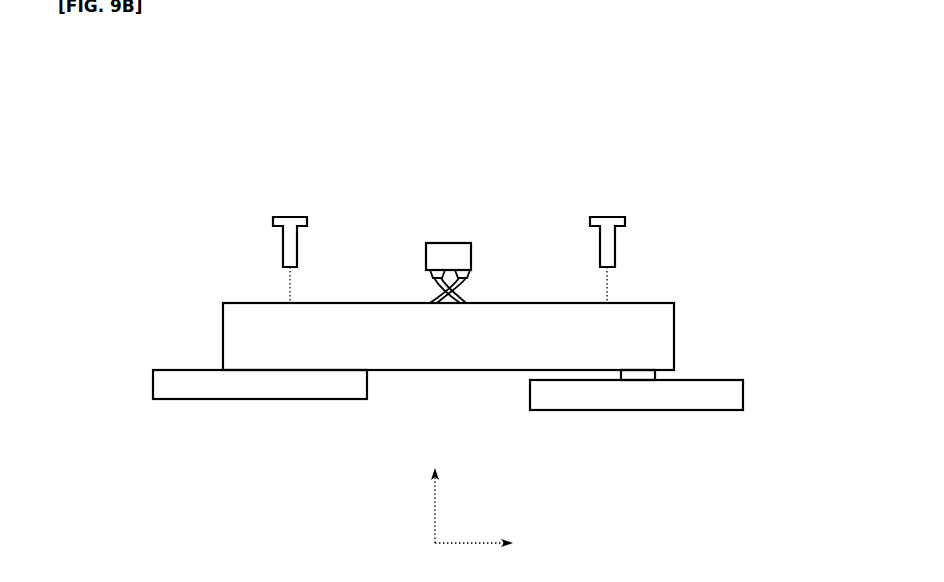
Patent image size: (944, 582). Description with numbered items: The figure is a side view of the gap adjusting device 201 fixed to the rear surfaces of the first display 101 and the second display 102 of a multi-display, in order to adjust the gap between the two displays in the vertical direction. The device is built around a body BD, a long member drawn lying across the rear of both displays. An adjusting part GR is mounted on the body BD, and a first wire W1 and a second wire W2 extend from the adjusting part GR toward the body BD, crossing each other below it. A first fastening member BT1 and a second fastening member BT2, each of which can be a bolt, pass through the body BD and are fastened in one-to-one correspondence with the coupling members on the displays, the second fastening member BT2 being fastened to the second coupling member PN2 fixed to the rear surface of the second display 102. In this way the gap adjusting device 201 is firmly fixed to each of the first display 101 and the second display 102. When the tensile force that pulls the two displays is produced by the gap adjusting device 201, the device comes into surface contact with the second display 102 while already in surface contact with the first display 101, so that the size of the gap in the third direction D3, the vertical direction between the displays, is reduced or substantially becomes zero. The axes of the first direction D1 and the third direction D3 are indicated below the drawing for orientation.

The gap adjusting device 201 is at (707, 152).
The body BD is at (672, 318).
The first display 101 is at (152, 383).
The second display 102 is at (745, 392).
The second coupling member PN2 is at (657, 378).
The first fastening member BT1 is at (290, 216).
The second fastening member BT2 is at (607, 216).
The adjusting part GR is at (448, 243).
The first wire W1 is at (427, 278).
The second wire W2 is at (471, 279).
The third direction D3 is at (435, 492).
The first direction D1 is at (490, 545).